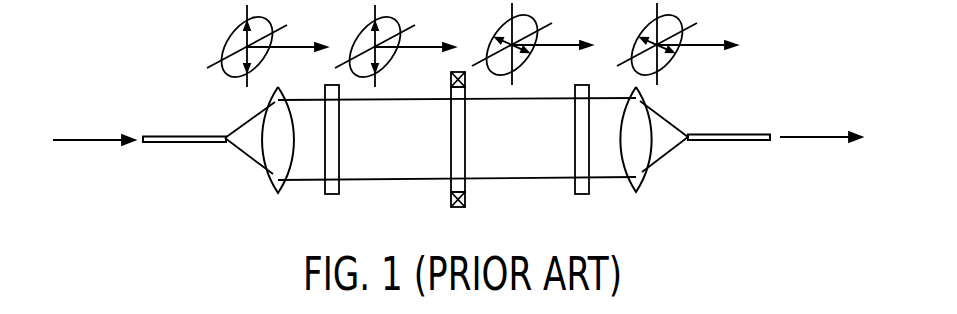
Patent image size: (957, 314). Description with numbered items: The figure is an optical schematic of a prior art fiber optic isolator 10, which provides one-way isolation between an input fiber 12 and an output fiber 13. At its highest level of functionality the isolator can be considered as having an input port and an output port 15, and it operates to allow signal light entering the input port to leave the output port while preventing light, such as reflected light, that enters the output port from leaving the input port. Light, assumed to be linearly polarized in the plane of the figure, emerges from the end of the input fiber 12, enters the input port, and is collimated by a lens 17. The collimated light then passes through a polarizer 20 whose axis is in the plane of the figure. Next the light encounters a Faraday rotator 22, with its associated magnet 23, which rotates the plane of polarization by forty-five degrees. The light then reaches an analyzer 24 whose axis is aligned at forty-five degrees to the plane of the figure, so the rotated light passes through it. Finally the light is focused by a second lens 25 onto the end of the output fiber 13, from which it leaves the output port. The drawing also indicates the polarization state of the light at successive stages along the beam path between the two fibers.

The fiber optic isolator 10 is at (270, 236).
The input fiber 12 is at (212, 146).
The output fiber 13 is at (720, 143).
The port 15 is at (457, 120).
The lens 17 is at (273, 177).
The polarizer 20 is at (339, 185).
The Faraday rotator 22 is at (466, 183).
The magnet 23 is at (452, 202).
The analyzer 24 is at (590, 185).
The lens 25 is at (642, 177).